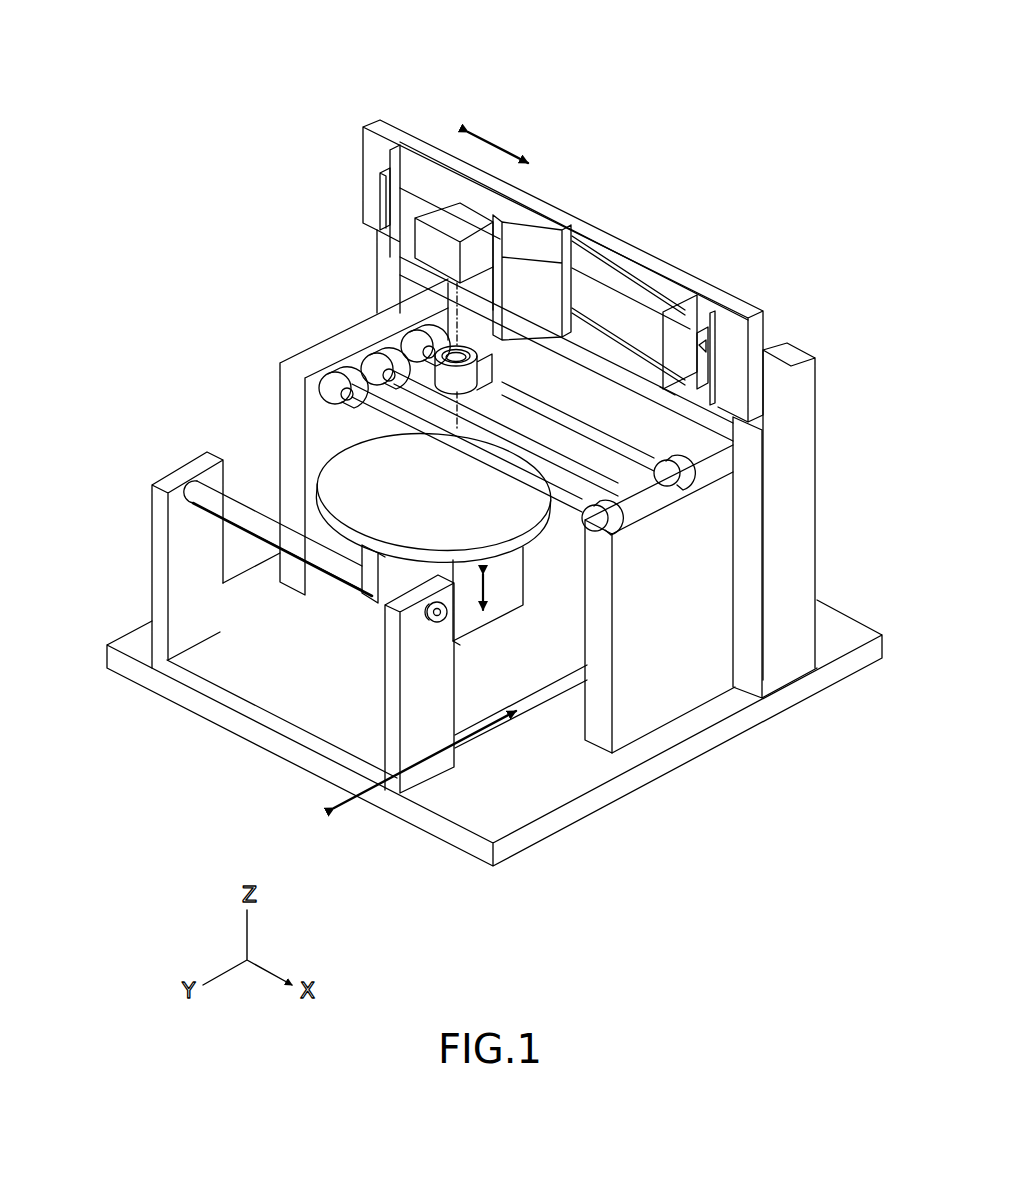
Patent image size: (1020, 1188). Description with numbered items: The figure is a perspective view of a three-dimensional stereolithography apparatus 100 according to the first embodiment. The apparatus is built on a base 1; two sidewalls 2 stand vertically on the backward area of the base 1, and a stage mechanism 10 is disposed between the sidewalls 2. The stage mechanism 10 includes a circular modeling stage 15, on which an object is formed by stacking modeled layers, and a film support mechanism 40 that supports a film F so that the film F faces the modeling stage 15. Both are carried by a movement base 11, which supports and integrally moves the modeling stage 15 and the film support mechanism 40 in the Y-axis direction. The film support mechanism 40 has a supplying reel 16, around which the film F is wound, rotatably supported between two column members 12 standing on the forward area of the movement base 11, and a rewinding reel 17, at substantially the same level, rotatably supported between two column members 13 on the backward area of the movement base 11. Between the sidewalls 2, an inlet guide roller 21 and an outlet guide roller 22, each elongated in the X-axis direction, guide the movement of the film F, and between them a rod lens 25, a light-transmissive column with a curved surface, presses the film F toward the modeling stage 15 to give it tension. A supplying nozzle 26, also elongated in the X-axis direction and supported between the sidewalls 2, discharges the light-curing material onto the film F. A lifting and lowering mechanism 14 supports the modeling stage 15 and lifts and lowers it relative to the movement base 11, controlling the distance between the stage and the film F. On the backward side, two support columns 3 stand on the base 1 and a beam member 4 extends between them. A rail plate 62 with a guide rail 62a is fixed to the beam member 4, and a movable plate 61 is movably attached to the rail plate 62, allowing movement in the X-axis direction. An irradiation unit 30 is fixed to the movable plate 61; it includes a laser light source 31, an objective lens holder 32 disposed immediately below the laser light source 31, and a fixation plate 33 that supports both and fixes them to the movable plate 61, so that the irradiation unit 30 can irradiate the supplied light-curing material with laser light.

The 3-D stereolithography apparatus 100 is at (433, 66).
The base 1 is at (600, 795).
The sidewall 2 is at (283, 385).
The support column 3 is at (388, 273).
The beam member 4 is at (737, 310).
The stage mechanism 10 is at (178, 448).
The movement base 11 is at (297, 712).
The column member 12 is at (160, 520).
The column member 13 is at (507, 330).
The lifting and lowering mechanism 14 is at (470, 565).
The modeling stage 15 is at (345, 500).
The supplying reel 16 is at (240, 525).
The rewinding reel 17 is at (667, 433).
The inlet guide roller 21 is at (508, 600).
The outlet guide roller 22 is at (603, 470).
The rod lens 25 is at (445, 378).
The supplying nozzle 26 is at (630, 460).
The irradiation unit 30 is at (446, 218).
The laser light source 31 is at (375, 237).
The objective lens holder 32 is at (333, 400).
The fixation plate 33 is at (487, 213).
The film support mechanism 40 is at (149, 492).
The movable plate 61 is at (542, 230).
The rail plate 62 is at (697, 320).
The guide rail 62a is at (660, 362).
The film F is at (247, 477).